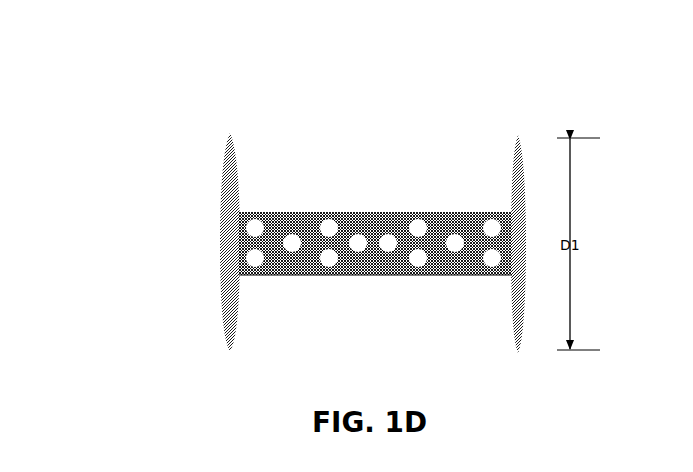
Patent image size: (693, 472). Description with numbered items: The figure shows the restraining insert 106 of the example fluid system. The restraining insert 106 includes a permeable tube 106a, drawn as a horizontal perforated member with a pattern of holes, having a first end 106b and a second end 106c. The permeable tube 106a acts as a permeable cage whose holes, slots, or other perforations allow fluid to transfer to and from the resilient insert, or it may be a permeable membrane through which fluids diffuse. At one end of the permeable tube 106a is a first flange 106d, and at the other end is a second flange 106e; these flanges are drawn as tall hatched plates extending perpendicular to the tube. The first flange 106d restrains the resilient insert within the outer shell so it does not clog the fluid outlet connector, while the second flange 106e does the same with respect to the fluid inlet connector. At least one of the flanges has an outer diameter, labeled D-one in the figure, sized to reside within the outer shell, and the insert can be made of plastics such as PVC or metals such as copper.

The restraining insert 106 is at (391, 212).
The permeable tube 106a is at (281, 217).
The first end 106b is at (488, 278).
The second end 106c is at (260, 277).
The first flange 106d is at (513, 138).
The second flange 106e is at (225, 137).